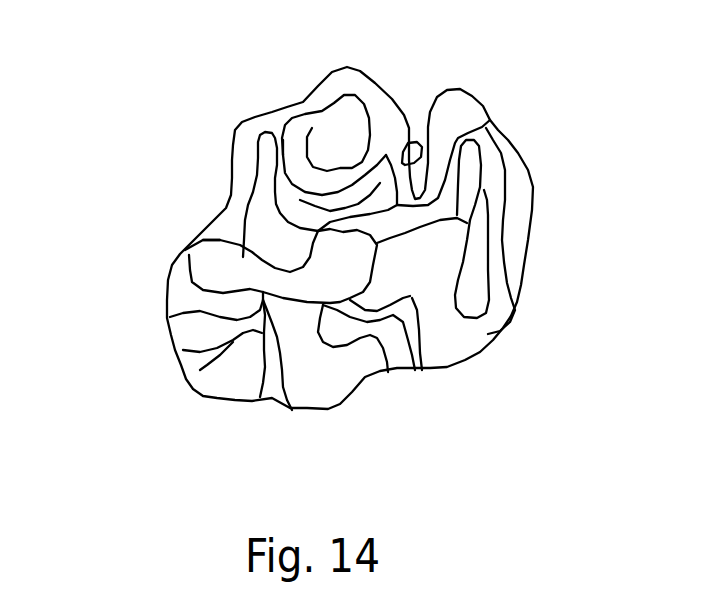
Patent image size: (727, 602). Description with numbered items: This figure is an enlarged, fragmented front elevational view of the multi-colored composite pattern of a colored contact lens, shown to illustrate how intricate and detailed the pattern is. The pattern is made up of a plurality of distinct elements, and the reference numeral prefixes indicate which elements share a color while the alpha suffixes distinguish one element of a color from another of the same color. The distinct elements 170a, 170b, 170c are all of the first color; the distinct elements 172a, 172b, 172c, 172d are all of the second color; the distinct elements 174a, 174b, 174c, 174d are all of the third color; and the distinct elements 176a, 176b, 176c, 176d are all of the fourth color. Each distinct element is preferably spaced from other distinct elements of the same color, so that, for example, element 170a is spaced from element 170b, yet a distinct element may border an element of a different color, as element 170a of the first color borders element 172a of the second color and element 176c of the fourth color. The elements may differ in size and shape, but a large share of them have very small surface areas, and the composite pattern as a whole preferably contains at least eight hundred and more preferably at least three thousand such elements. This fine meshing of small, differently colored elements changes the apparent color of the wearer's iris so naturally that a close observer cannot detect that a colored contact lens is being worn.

The distinct element of the first color 170a is at (260, 223).
The distinct element of the first color 170b is at (195, 362).
The distinct element of the first color 170c is at (296, 207).
The distinct element of the second color 172a is at (210, 262).
The distinct element of the second color 172b is at (458, 108).
The distinct element of the second color 172c is at (362, 105).
The distinct element of the second color 172d is at (415, 370).
The distinct element of the third color 174a is at (447, 258).
The distinct element of the third color 174b is at (307, 387).
The distinct element of the third color 174c is at (302, 128).
The distinct element of the third color 174d is at (498, 168).
The distinct element of the fourth color 176a is at (200, 338).
The distinct element of the fourth color 176b is at (408, 127).
The distinct element of the fourth color 176c is at (250, 155).
The distinct element of the fourth color 176d is at (490, 333).